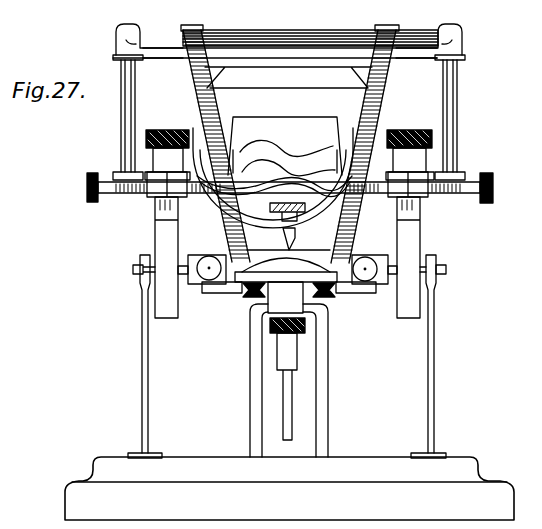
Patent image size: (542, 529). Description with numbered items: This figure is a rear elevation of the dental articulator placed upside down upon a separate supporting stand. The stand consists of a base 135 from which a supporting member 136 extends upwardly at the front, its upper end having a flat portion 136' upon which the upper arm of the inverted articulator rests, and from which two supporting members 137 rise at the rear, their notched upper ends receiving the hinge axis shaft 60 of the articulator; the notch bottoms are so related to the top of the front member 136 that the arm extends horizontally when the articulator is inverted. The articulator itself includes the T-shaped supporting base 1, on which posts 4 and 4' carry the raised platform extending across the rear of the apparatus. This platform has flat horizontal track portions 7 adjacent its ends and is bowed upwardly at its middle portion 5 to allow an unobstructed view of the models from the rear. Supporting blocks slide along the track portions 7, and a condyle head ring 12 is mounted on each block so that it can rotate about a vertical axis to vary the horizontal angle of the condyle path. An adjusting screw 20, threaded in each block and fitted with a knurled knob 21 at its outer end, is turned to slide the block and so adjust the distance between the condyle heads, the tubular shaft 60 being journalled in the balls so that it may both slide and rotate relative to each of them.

The supporting base 1 is at (148, 52).
The post 4 is at (449, 102).
The post 4' is at (473, 116).
The track portion 7 is at (136, 184).
The adjusting screw 20 is at (452, 203).
The knurled knob 21 is at (494, 193).
The upwardly bowed portion 5 is at (302, 227).
The hinge axis shaft 60 is at (392, 278).
The condyle head ring 12 is at (408, 318).
The flat portion 136' is at (265, 307).
The supporting member 136 is at (315, 369).
The supporting member 137 is at (143, 426).
The base 135 is at (451, 468).